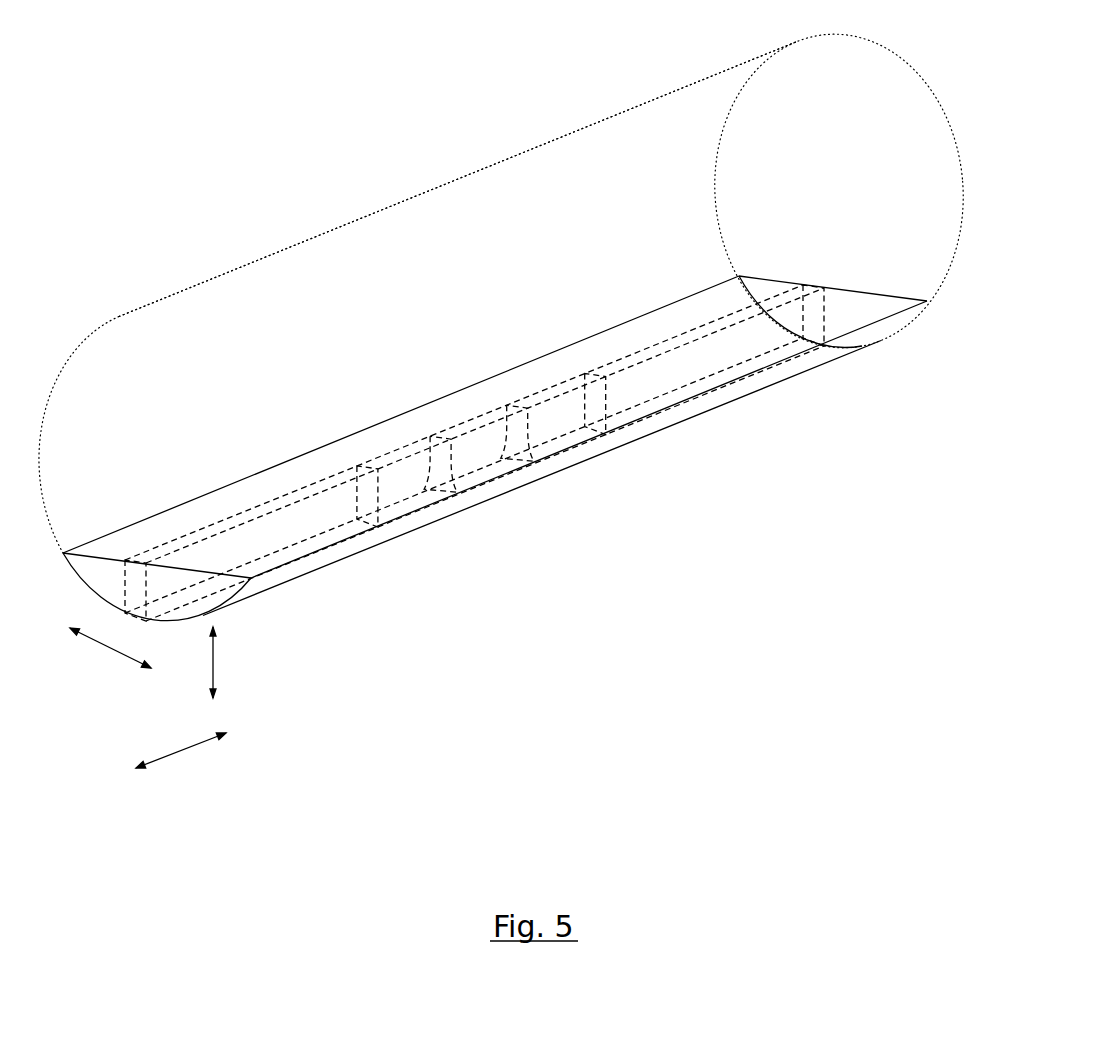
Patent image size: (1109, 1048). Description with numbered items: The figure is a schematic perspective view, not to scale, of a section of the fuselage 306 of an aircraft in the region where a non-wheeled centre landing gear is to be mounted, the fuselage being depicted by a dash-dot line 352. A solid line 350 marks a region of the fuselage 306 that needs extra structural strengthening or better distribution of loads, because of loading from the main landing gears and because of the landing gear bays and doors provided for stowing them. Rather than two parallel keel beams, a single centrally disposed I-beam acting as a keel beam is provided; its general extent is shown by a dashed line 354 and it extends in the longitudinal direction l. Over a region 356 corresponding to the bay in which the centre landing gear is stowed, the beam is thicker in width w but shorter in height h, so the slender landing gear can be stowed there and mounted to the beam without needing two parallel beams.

The fuselage 306 is at (379, 247).
The dash-dot line 352 is at (678, 97).
The solid line region 350 is at (758, 278).
The dashed line 354 is at (202, 527).
The region 356 is at (500, 488).
The height h is at (221, 654).
The width w is at (102, 657).
The longitudinal direction l is at (186, 760).